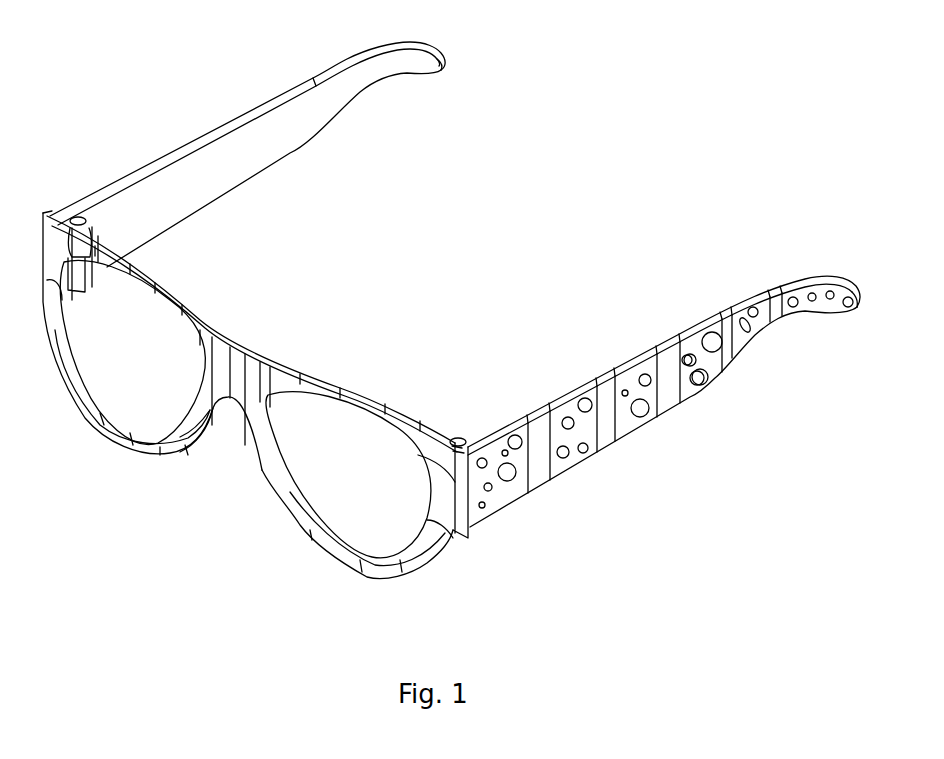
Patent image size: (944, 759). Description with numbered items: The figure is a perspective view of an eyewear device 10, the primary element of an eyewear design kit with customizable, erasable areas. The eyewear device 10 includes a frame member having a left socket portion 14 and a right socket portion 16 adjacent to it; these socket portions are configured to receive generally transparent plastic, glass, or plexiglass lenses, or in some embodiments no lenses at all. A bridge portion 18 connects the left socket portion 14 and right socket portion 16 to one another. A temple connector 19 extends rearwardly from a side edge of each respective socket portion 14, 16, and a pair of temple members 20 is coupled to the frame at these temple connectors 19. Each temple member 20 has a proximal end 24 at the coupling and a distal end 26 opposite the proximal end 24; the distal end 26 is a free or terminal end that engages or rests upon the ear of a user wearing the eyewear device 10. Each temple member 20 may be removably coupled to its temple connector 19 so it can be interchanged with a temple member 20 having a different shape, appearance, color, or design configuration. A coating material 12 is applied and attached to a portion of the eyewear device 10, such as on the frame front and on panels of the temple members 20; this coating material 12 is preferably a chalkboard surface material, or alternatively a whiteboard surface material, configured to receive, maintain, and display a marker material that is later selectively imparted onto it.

The eyewear device 10 is at (191, 68).
The coating material 12 is at (240, 378).
The left socket portion 14 is at (92, 403).
The right socket portion 16 is at (340, 563).
The bridge portion 18 is at (234, 403).
The temple connector 19 is at (77, 216).
The temple member 20 is at (262, 158).
The proximal end 24 is at (63, 208).
The distal end 26 is at (447, 70).